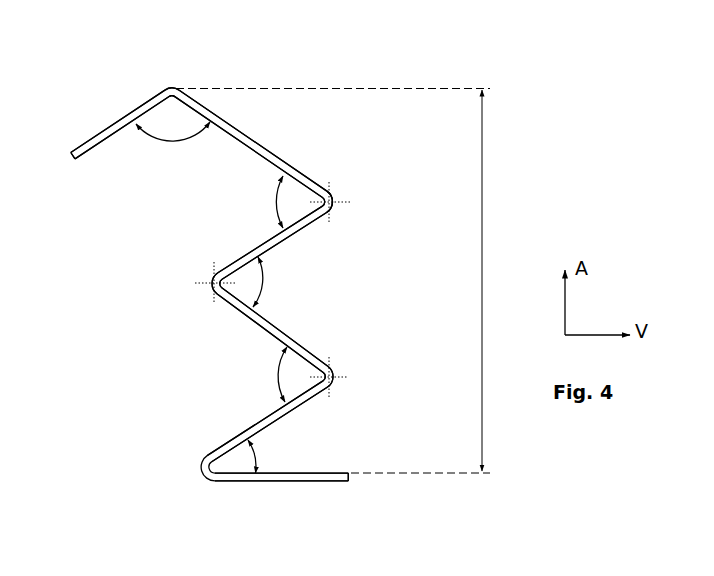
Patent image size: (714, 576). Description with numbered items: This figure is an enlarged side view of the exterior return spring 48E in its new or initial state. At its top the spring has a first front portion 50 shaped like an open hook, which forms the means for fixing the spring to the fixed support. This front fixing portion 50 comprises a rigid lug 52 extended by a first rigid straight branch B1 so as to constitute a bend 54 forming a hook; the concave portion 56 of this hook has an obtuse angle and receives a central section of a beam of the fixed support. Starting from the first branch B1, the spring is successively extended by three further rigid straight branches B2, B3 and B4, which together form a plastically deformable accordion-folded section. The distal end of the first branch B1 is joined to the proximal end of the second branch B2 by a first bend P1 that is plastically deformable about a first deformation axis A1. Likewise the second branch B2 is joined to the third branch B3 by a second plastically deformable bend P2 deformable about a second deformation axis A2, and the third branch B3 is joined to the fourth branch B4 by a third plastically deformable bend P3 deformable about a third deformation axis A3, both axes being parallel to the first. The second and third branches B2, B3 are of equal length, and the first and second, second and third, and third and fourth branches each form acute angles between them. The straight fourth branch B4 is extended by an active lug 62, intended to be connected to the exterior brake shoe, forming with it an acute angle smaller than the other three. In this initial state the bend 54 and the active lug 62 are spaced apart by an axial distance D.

The first front portion 50 is at (165, 73).
The rigid lug 52 is at (96, 131).
The bend 54 is at (173, 91).
The concave portion 56 is at (177, 102).
The exterior return spring 48E is at (398, 200).
The active lug 62 is at (312, 494).
The first rigid straight branch B1 is at (281, 155).
The second rigid branch B2 is at (288, 243).
The third rigid branch B3 is at (310, 345).
The fourth rigid branch B4 is at (282, 422).
The first bend P1 is at (338, 193).
The second plastically deformable bend P2 is at (213, 285).
The third plastically deformable bend P3 is at (337, 387).
The first deformation axis A1 is at (336, 205).
The second deformation axis A2 is at (213, 282).
The third deformation axis A3 is at (338, 372).
The axial distance D is at (339, 281).